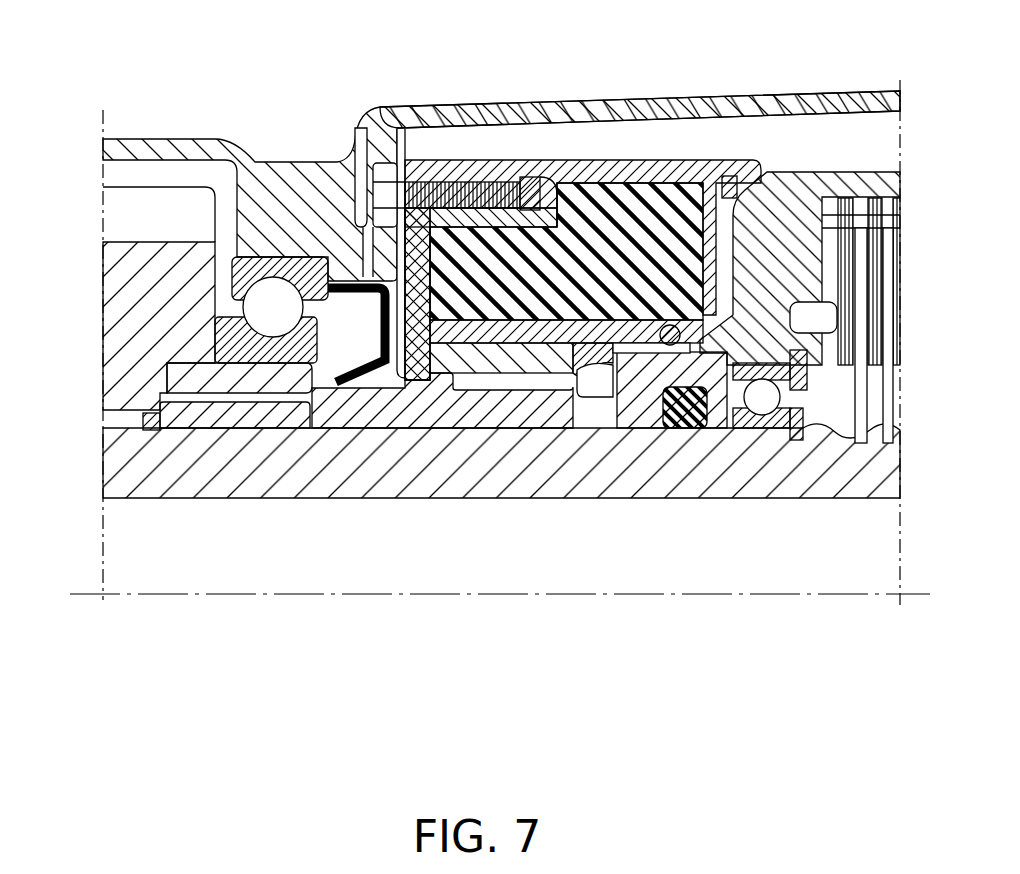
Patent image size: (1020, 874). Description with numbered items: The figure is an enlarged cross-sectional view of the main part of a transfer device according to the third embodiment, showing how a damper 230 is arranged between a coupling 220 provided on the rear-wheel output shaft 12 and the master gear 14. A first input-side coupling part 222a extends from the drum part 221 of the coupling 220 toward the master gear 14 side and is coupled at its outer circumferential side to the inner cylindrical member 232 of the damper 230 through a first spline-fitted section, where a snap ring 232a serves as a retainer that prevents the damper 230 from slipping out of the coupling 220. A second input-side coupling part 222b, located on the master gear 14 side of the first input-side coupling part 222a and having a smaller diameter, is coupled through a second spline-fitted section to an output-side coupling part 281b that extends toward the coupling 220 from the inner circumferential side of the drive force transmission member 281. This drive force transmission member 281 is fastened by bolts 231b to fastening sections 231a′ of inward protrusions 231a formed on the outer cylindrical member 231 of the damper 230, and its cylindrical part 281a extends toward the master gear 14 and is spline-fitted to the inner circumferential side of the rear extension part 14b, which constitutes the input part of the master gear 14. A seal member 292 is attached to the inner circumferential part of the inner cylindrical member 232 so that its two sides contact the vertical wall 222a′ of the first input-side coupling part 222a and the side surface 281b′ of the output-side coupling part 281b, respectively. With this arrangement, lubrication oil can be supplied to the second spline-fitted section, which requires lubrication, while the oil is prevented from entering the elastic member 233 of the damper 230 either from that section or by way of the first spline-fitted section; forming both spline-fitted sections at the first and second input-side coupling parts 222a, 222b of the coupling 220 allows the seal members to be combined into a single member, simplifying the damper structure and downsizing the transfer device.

The rear-wheel output shaft 12 is at (120, 462).
The master gear 14 is at (125, 296).
The rear extension part 14b is at (213, 374).
The drive force transmission member 281 is at (355, 108).
The cylindrical part 281a is at (290, 415).
The output-side coupling part 281b is at (460, 376).
The side surface 281b′ is at (575, 350).
The outer cylindrical member 231 is at (582, 160).
The inward protrusions 231a is at (467, 182).
The fastening sections 231a′ is at (497, 178).
The bolts 231b is at (401, 190).
The damper 230 is at (637, 148).
The inner cylindrical member 232 is at (392, 345).
The snap ring 232a is at (742, 420).
The elastic member 233 is at (757, 163).
The seal member 292 is at (608, 335).
The drum part 221 is at (805, 190).
The coupling 220 is at (868, 165).
The first input-side coupling part 222a is at (687, 390).
The vertical wall 222a′ is at (600, 375).
The second input-side coupling part 222b is at (430, 345).